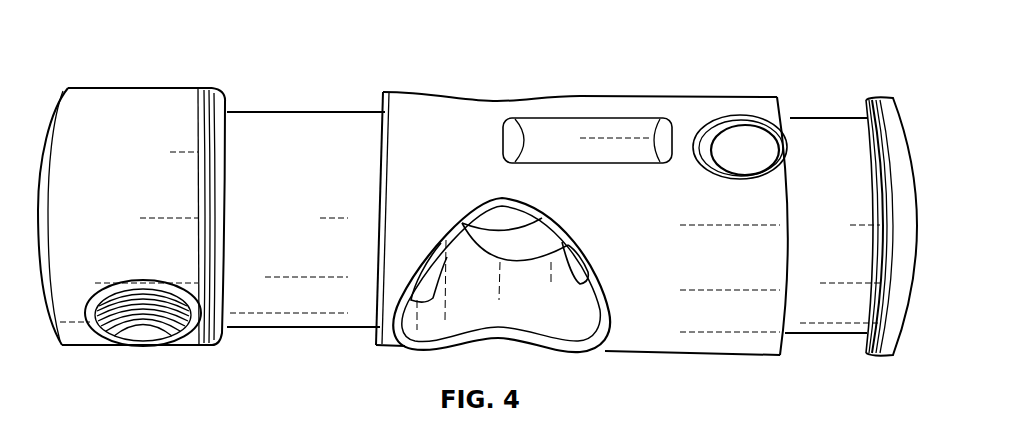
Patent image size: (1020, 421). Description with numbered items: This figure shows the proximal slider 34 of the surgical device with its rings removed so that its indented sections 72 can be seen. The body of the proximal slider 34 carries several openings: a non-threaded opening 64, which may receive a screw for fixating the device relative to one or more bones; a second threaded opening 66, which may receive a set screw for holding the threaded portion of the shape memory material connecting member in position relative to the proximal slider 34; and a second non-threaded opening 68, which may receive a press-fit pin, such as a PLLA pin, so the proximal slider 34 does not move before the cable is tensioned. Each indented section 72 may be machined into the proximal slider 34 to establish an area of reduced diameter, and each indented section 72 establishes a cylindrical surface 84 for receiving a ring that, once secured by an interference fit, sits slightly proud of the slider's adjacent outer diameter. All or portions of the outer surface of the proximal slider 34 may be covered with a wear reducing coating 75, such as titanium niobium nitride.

The proximal slider 34 is at (648, 66).
The non-threaded opening 64 is at (525, 305).
The second threaded opening 66 is at (145, 335).
The second non-threaded opening 68 is at (748, 135).
The indented section 72 is at (553, 174).
The wear reducing coating 75 is at (115, 104).
The cylindrical surface 84 is at (337, 112).